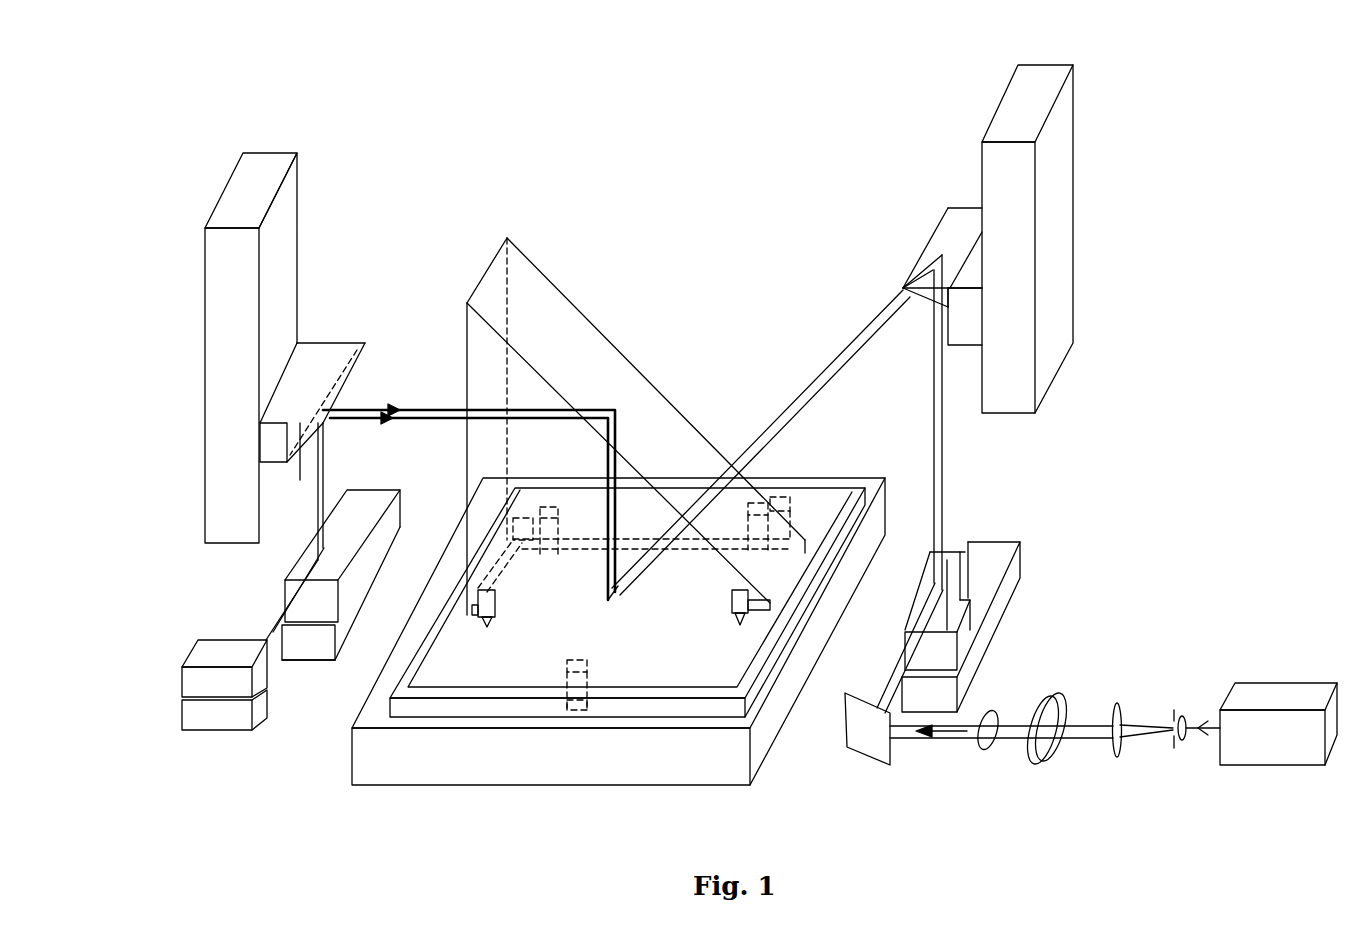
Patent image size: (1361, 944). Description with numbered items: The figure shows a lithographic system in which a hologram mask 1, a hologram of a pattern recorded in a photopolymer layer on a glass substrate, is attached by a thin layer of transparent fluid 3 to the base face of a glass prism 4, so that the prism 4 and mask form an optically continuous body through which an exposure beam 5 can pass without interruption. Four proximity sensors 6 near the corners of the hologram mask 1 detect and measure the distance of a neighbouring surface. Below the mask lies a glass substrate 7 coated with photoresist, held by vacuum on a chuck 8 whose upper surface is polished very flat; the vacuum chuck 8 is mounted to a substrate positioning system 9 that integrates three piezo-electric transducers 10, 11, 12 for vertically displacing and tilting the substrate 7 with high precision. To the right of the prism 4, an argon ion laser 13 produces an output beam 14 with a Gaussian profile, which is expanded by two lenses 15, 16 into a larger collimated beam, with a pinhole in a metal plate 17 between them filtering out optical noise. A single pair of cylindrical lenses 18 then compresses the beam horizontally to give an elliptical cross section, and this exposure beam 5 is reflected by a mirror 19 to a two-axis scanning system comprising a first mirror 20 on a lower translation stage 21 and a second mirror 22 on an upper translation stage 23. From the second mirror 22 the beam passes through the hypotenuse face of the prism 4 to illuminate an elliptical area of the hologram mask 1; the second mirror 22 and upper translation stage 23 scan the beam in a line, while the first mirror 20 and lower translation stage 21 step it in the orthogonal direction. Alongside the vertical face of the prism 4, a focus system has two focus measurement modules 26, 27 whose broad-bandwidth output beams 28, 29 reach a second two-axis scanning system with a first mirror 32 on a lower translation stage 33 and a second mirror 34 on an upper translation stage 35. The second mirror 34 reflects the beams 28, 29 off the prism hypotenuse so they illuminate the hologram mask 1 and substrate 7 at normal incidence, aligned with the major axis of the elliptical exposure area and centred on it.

The hologram mask 1 is at (767, 607).
The thin layer of transparent fluid 3 is at (472, 608).
The glass prism 4 is at (568, 300).
The exposure beam 5 is at (945, 460).
The proximity sensors 6 is at (478, 617).
The glass substrate 7 is at (470, 675).
The vacuum chuck 8 is at (540, 707).
The substrate positioning system 9 is at (690, 773).
The piezo-electric transducer 10 is at (580, 703).
The piezo-electric transducer 11 is at (543, 510).
The piezo-electric transducer 12 is at (763, 513).
The argon ion laser 13 is at (1297, 755).
The output beam 14 is at (1204, 723).
The lens 15 is at (1188, 748).
The lens 16 is at (1113, 763).
The metal plate with pinhole 17 is at (1170, 755).
The pair of cylindrical lenses 18 is at (980, 778).
The mirror 19 is at (878, 755).
The first mirror 20 is at (955, 555).
The lower translation stage 21 is at (985, 637).
The second mirror 22 is at (937, 217).
The upper translation stage 23 is at (1068, 228).
The focus measurement module 26 is at (187, 715).
The focus measurement module 27 is at (187, 678).
The output beam 28 is at (270, 625).
The output beam 29 is at (270, 610).
The first mirror 32 is at (310, 538).
The lower translation stage 33 is at (307, 663).
The second mirror 34 is at (340, 352).
The upper translation stage 35 is at (217, 312).